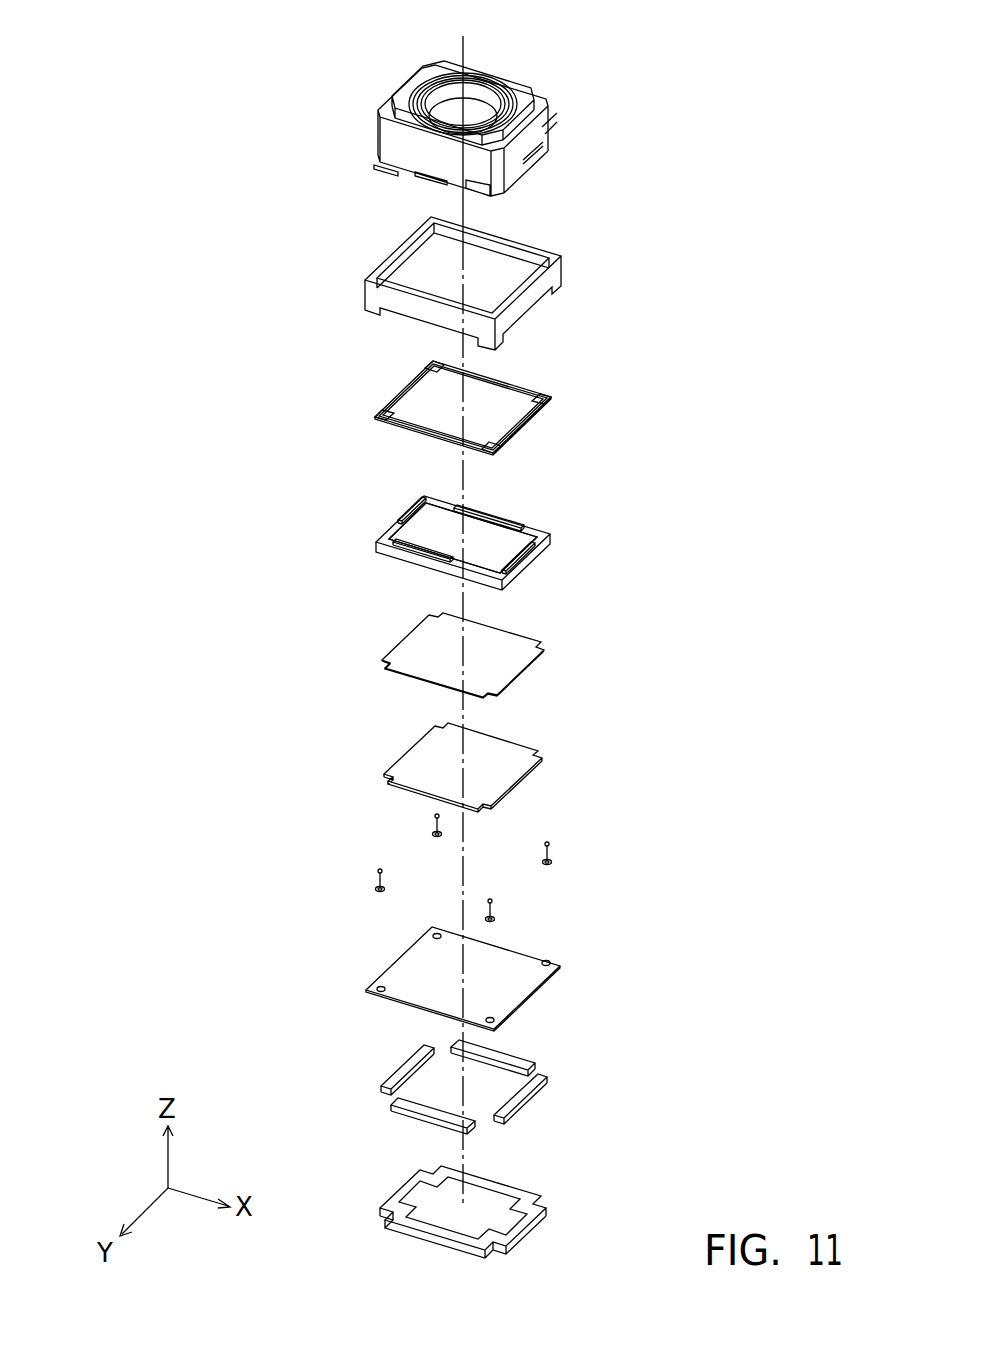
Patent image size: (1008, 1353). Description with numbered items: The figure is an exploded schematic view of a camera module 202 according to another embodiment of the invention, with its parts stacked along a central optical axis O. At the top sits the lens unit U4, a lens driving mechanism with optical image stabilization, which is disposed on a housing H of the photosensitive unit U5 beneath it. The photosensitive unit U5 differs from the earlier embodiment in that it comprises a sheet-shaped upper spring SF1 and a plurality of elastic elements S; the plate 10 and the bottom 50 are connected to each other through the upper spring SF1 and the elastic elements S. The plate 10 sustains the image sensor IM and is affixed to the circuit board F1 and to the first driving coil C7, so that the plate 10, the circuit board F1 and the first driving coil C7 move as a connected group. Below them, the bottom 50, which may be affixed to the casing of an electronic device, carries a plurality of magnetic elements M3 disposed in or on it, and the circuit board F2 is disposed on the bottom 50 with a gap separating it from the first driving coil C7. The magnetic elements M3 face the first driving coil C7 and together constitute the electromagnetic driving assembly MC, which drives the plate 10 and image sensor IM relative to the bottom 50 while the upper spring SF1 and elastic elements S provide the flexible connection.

The camera module 202 is at (204, 40).
The optical axis O / center C O is at (460, 605).
The lens unit U4 is at (566, 116).
The electromagnetic driving assembly MC is at (222, 133).
The photosensitive unit U5 is at (313, 218).
The housing H is at (530, 298).
The upper spring SF1 is at (547, 400).
The plate 10 is at (530, 558).
The image sensor IM is at (487, 532).
The circuit board F1 is at (512, 662).
The first driving coil C7 is at (512, 773).
The elastic elements S is at (430, 822).
The circuit board F2 is at (512, 985).
The magnetic elements M3 is at (398, 1077).
The bottom 50 is at (542, 1190).